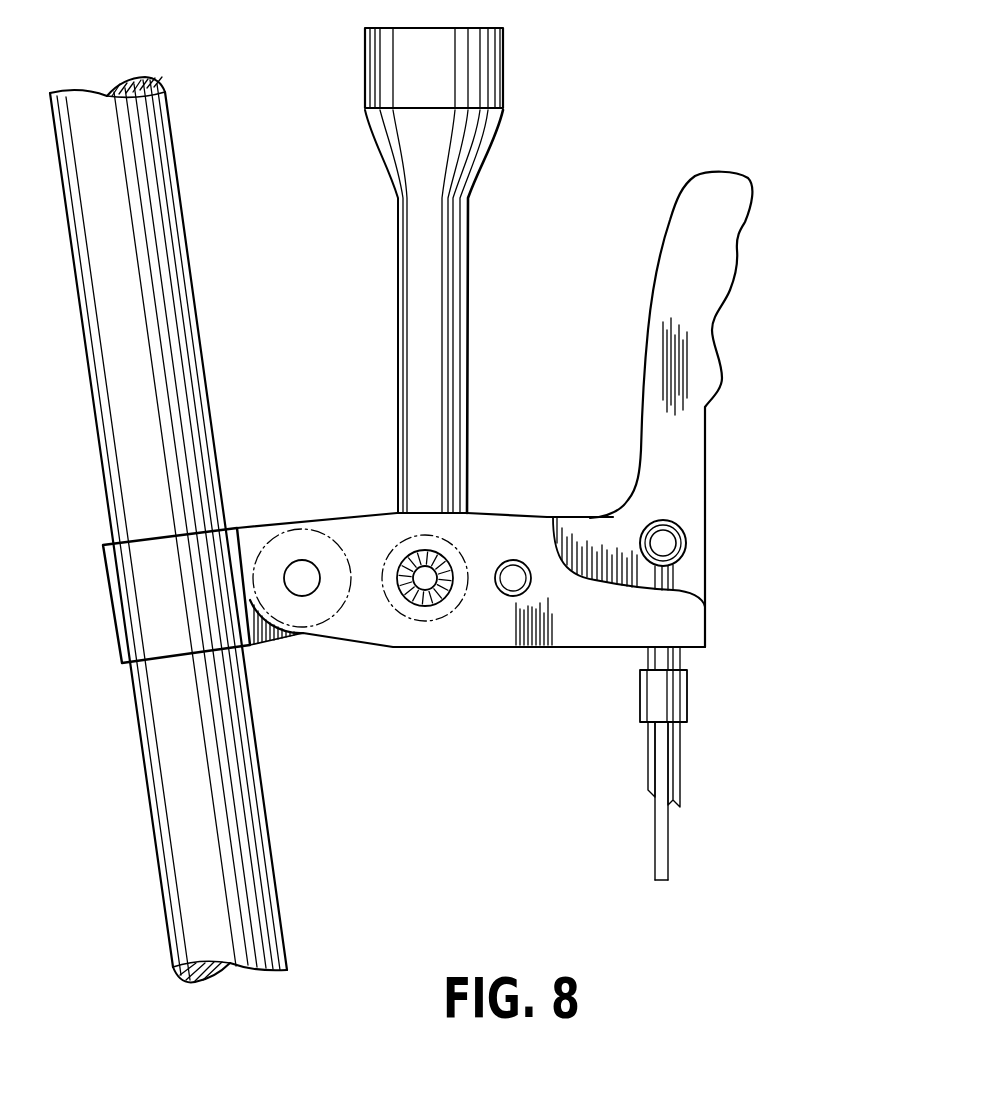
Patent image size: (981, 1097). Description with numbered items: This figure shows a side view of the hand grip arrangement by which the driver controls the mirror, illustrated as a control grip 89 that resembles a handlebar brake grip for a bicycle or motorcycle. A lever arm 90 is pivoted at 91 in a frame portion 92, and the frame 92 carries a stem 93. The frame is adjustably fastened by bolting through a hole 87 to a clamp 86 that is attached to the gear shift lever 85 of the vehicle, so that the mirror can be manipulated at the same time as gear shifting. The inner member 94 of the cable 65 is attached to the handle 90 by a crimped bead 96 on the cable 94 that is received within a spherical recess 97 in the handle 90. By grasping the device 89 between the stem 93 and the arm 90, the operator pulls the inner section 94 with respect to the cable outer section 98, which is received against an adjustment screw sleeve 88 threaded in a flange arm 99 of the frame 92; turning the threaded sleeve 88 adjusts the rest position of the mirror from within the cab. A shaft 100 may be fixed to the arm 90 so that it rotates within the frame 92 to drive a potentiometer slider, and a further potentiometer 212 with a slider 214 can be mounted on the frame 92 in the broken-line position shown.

The cable 65 is at (696, 717).
The gear shift lever 85 is at (263, 850).
The clamp 86 is at (181, 607).
The hole 87 is at (305, 565).
The adjustment screw sleeve 88 is at (687, 683).
The control grip 89 is at (567, 133).
The lever arm 90 is at (737, 260).
The pivot 91 is at (510, 530).
The frame portion 92 is at (477, 528).
The stem 93 is at (412, 243).
The inner member 94 is at (680, 570).
The crimped bead 96 is at (686, 540).
The spherical recess 97 is at (663, 520).
The cable outer section 98 is at (673, 773).
The flange arm 99 is at (583, 650).
The shaft 100 is at (505, 588).
The potentiometer 212 is at (380, 620).
The slider 214 is at (430, 600).